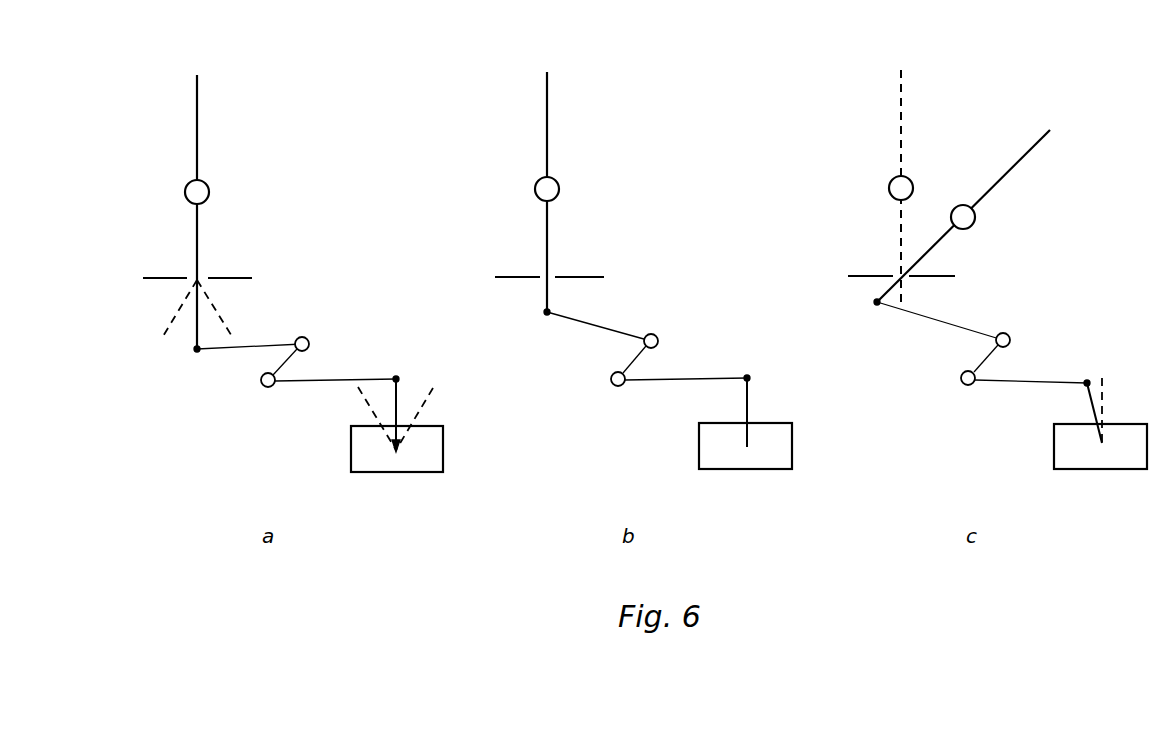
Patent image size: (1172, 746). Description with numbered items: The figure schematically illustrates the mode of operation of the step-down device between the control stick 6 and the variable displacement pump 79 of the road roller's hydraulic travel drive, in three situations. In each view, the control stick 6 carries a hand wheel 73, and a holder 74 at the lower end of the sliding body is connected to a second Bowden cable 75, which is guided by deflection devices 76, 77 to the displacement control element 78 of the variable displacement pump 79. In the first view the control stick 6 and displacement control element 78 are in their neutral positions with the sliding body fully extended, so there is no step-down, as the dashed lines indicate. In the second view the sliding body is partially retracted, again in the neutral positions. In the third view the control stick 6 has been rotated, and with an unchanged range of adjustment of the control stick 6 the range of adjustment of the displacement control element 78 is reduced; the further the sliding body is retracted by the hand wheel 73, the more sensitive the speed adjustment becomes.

The control stick 6 is at (198, 152).
The hand wheel 73 is at (204, 196).
The holder 74 is at (193, 350).
The second Bowden cable 75 is at (248, 340).
The deflection device 76 is at (311, 346).
The deflection device 77 is at (262, 385).
The displacement control element 78 is at (397, 379).
The variable displacement pump 79 is at (351, 452).